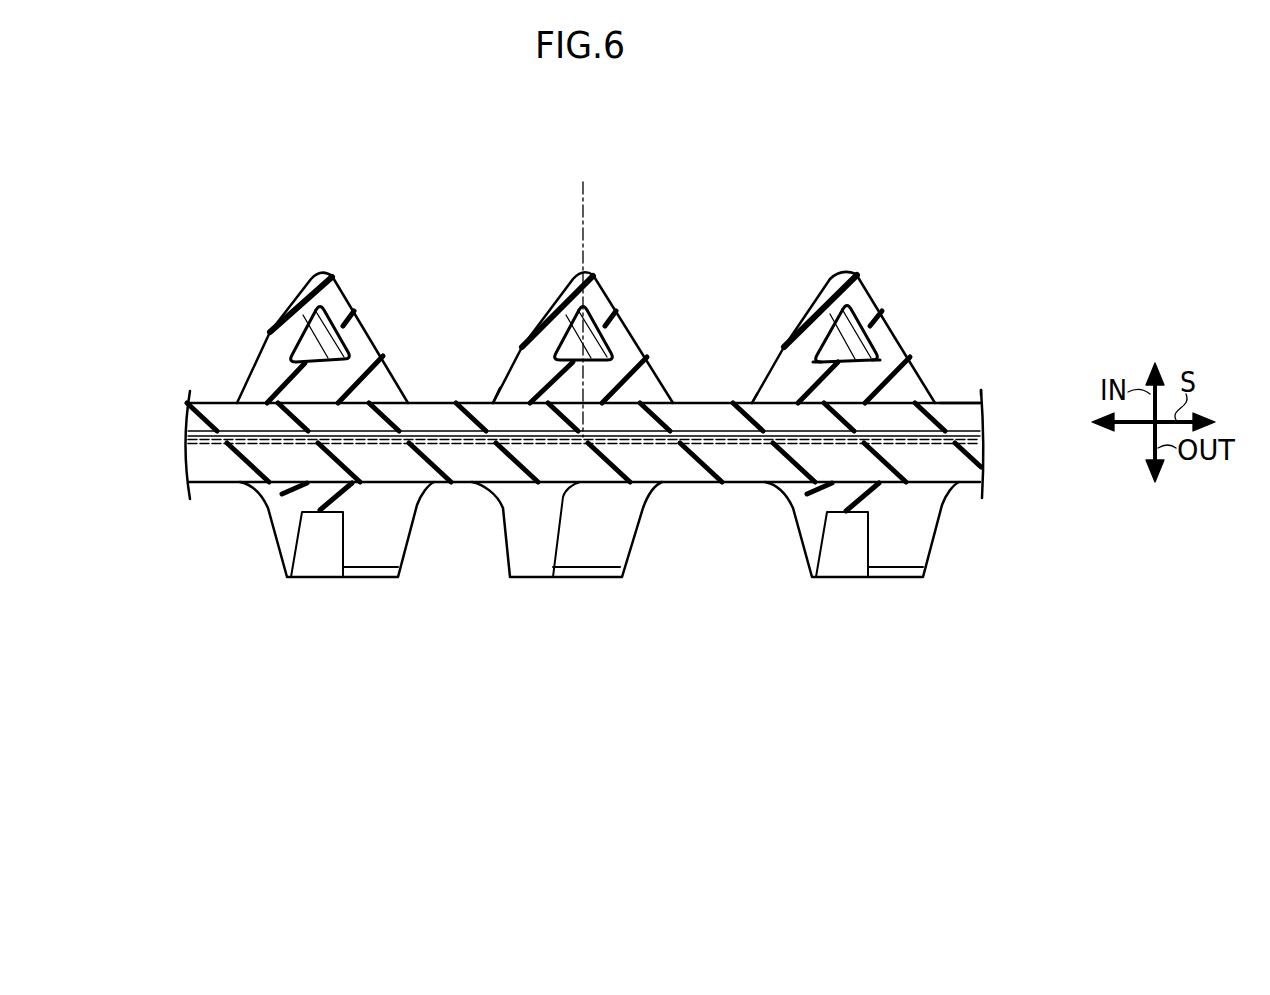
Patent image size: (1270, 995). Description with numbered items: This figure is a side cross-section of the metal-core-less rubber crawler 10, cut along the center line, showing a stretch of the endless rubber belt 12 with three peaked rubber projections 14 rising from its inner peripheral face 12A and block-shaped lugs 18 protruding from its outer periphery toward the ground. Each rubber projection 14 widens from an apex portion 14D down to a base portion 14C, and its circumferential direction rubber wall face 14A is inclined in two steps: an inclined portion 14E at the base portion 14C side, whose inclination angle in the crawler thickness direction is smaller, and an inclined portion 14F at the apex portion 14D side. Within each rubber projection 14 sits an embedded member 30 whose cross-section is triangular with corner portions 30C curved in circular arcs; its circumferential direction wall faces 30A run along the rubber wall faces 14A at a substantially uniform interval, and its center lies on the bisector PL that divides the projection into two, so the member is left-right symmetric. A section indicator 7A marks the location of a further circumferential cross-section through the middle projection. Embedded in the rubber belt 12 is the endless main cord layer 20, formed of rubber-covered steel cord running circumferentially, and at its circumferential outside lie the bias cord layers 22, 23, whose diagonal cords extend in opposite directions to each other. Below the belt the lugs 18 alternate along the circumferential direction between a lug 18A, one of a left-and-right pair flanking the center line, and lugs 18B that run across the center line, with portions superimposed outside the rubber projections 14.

The rubber crawler 10 is at (183, 232).
The rubber belt 12 is at (204, 399).
The inner peripheral face 12A is at (967, 393).
The rubber projection 14 is at (360, 302).
The circumferential direction rubber wall face 14A is at (787, 260).
The base portion 14C is at (758, 399).
The apex portion 14D is at (843, 272).
The inclined portion 14E is at (757, 398).
The inclined portion 14F is at (803, 314).
The lug 18 is at (599, 573).
The lug 18A is at (534, 578).
The lug 18B is at (319, 578).
The main cord layer 20 is at (963, 434).
The bias cord layer 22 is at (915, 440).
The bias cord layer 23 is at (940, 444).
The embedded member 30 is at (888, 304).
The circumferential direction wall face 30A is at (824, 316).
The corner portion 30C is at (861, 309).
The section line 7A is at (543, 271).
The bisector PL is at (585, 197).